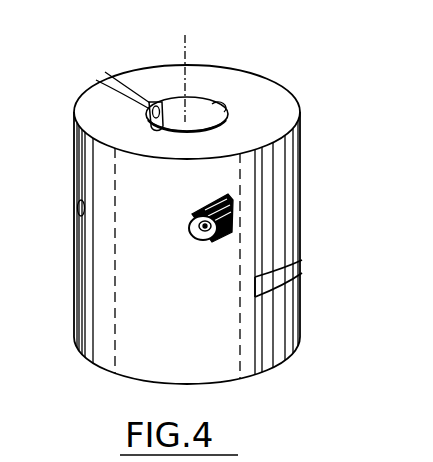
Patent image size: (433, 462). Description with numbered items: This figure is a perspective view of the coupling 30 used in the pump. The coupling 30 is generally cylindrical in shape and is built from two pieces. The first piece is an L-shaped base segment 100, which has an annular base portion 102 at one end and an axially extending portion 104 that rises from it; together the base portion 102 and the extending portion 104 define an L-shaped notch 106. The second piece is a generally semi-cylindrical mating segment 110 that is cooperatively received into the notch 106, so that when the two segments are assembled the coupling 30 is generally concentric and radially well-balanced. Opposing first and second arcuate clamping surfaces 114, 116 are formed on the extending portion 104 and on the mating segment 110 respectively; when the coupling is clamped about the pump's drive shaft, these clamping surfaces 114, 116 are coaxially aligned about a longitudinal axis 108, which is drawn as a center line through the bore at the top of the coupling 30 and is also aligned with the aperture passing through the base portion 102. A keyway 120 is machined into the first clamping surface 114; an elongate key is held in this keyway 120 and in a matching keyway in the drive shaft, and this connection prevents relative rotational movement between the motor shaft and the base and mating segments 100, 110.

The coupling 30 is at (312, 167).
The L-shaped base segment 100 is at (140, 357).
The annular base portion 102 is at (288, 322).
The axially extending portion 104 is at (88, 177).
The L-shaped notch 106 is at (302, 260).
The longitudinal axis 108 is at (188, 58).
The mating segment 110 is at (273, 90).
The first arcuate clamping surface 114 is at (167, 100).
The second arcuate clamping surface 116 is at (233, 70).
The keyway 120 is at (113, 91).